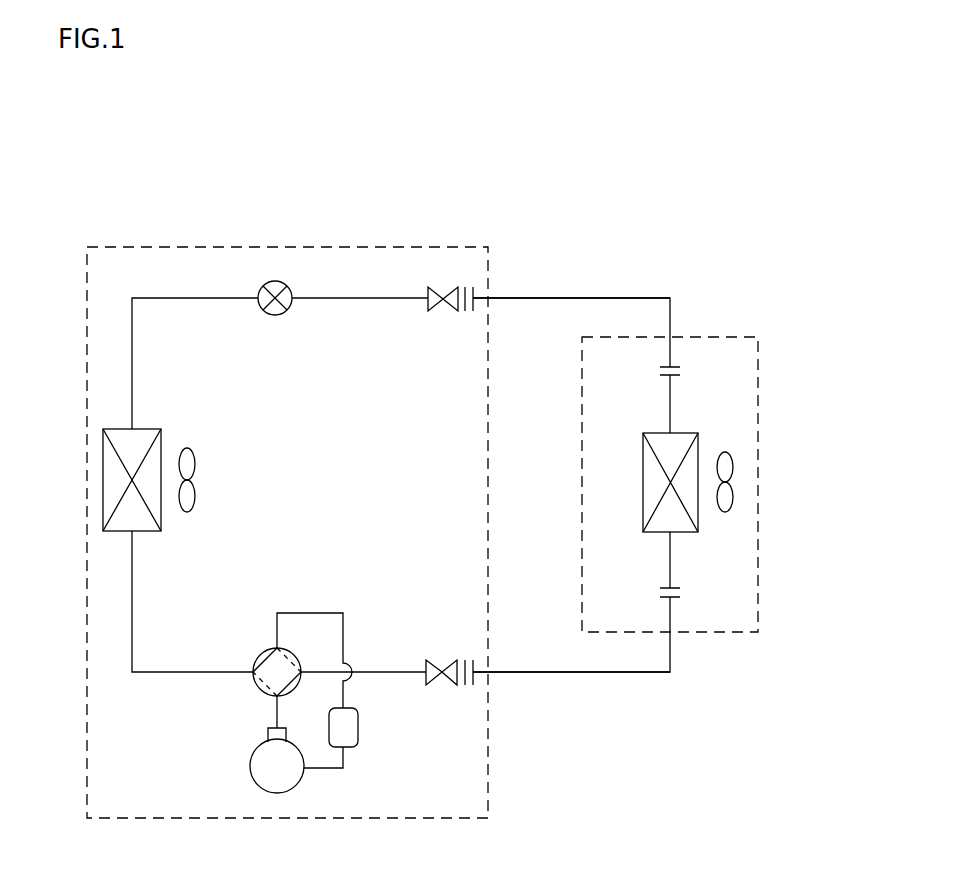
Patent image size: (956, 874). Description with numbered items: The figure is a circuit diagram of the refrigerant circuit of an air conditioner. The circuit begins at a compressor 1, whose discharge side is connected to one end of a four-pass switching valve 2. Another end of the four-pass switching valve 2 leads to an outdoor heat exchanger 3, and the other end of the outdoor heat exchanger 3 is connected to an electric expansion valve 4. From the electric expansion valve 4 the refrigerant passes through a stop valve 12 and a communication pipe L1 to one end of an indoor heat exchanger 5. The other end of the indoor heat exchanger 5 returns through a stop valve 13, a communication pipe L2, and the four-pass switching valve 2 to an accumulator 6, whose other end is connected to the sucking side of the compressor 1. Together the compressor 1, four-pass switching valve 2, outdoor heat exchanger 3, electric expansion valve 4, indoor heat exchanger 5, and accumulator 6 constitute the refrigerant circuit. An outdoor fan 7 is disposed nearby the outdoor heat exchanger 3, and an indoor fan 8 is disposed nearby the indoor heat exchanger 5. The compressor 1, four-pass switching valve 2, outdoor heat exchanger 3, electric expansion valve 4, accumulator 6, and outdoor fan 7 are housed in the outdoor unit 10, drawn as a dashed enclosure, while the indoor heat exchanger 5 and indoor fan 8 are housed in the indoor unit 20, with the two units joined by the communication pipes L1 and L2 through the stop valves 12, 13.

The compressor 1 is at (251, 762).
The four-pass switching valve 2 is at (268, 652).
The outdoor heat exchanger 3 is at (146, 532).
The electric expansion valve 4 is at (278, 316).
The indoor heat exchanger 5 is at (680, 534).
The accumulator 6 is at (350, 748).
The outdoor fan 7 is at (187, 447).
The indoor fan 8 is at (724, 450).
The outdoor unit 10 is at (376, 241).
The stop valve 12 is at (433, 312).
The stop valve 13 is at (433, 686).
The indoor unit 20 is at (722, 331).
The communication pipe L1 is at (625, 298).
The communication pipe L2 is at (620, 673).